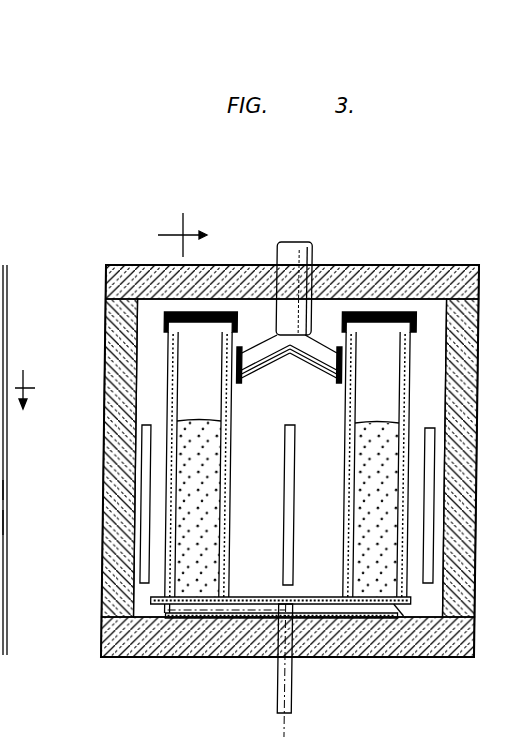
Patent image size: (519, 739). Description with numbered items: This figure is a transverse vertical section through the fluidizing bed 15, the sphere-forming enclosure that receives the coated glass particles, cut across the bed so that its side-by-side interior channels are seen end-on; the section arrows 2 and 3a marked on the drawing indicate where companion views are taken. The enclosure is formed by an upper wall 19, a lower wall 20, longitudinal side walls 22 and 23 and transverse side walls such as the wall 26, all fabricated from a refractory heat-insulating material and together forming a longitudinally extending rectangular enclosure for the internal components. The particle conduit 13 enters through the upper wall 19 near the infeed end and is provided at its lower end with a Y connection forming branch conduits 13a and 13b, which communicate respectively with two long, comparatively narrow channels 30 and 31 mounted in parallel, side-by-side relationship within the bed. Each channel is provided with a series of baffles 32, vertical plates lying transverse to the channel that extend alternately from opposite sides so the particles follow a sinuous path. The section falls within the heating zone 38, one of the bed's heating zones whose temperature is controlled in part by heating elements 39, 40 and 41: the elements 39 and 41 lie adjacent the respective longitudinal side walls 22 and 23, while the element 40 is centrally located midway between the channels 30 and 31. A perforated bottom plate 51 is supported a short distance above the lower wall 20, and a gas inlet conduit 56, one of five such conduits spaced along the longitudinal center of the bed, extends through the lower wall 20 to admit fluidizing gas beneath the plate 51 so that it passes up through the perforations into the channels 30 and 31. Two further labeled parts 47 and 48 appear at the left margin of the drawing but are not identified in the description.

The section line 2- 2 is at (182, 232).
The section line 3a is at (37, 387).
The conduit 13 is at (305, 243).
The branch conduit 13a is at (263, 347).
The branch conduit 13b is at (313, 343).
The fluidizing bed 15 is at (409, 254).
The upper wall 19 is at (149, 265).
The lower wall 20 is at (122, 652).
The longitudinal side wall 22 is at (105, 315).
The longitudinal side wall 23 is at (470, 437).
The transverse side wall 26 is at (8, 428).
The channel 30 is at (170, 352).
The channel 31 is at (412, 372).
The baffles 32 is at (185, 421).
The heating zone 38 is at (190, 545).
The heating element 39 is at (145, 476).
The heating element 40 is at (288, 535).
The heating element 41 is at (428, 570).
The side support 47 is at (5, 522).
The side bracket 48 is at (5, 493).
The perforated bottom plate 51 is at (362, 607).
The gas inlet conduit 56 is at (281, 697).